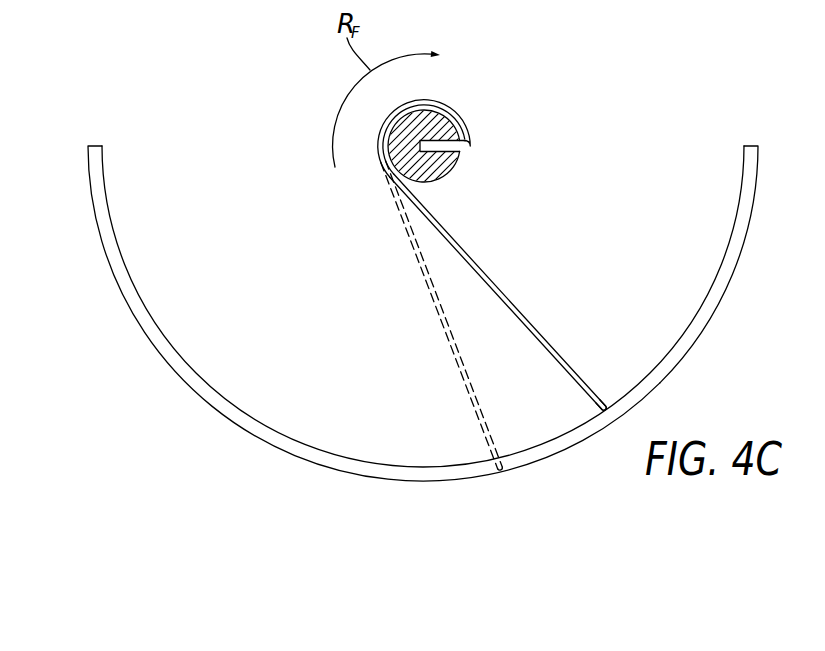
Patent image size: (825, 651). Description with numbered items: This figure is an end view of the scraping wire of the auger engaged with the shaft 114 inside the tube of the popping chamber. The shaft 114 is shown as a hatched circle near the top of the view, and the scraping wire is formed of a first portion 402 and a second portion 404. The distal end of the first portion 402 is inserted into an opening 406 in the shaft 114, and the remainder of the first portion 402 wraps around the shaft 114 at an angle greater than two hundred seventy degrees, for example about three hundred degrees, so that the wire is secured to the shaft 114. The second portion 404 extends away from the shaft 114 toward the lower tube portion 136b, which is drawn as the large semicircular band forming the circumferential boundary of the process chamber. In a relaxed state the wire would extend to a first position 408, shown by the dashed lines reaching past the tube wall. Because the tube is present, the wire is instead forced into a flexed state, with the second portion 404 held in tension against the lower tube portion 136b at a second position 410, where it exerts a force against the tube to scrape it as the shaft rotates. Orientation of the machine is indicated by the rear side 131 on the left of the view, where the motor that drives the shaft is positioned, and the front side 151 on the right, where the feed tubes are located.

The shaft 114 is at (450, 175).
The rear side 131 is at (122, 334).
The lower tube portion 136b is at (701, 302).
The front side 151 is at (752, 298).
The first portion 402 is at (429, 92).
The second portion 404 is at (488, 274).
The opening 406 is at (470, 155).
The first position 408 is at (430, 340).
The second position 410 is at (567, 339).